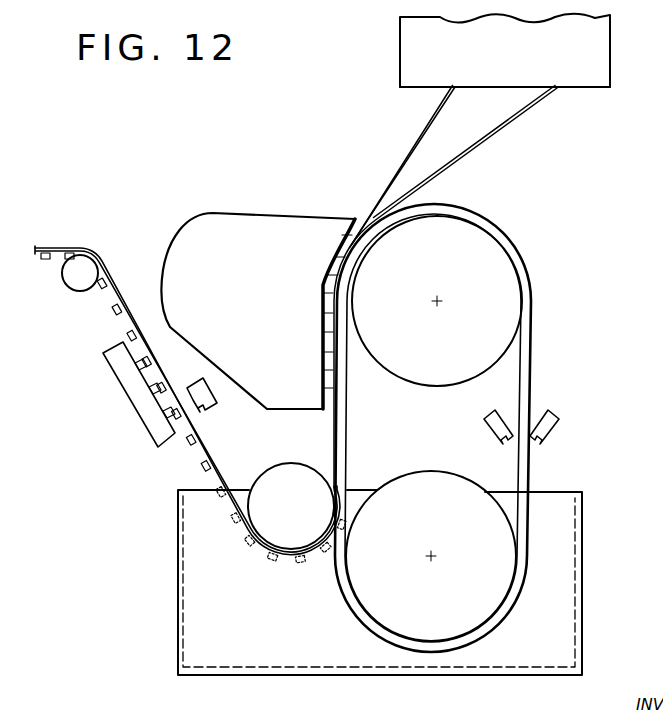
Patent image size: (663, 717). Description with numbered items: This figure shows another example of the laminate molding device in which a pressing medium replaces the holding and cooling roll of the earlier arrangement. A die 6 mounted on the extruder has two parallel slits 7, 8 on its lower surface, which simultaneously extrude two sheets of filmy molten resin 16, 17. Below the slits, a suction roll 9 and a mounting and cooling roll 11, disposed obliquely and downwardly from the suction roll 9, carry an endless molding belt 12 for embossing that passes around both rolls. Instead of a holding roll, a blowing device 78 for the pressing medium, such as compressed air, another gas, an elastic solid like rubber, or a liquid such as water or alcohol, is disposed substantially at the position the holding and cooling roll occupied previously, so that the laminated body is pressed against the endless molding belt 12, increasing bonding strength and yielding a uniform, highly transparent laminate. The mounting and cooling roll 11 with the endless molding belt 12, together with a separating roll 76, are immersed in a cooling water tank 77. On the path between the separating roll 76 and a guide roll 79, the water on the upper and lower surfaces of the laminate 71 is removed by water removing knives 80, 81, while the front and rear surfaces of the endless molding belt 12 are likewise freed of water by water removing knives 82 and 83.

The die 6 is at (612, 58).
The slit 7 is at (557, 91).
The slit 8 is at (444, 90).
The suction roll 9 is at (500, 265).
The mounting and cooling roll 11 is at (486, 604).
The endless molding belt 12 is at (532, 373).
The filmy molten resin 16 is at (489, 140).
The filmy molten resin 17 is at (410, 157).
The laminate 71 is at (116, 290).
The separating roll 76 is at (284, 463).
The cooling water tank 77 is at (177, 553).
The blowing device 78 is at (258, 212).
The guide roll 79 is at (84, 281).
The water removing knife 80 is at (134, 409).
The water removing knife 81 is at (212, 404).
The water removing knife 82 is at (486, 423).
The water removing knife 83 is at (556, 434).